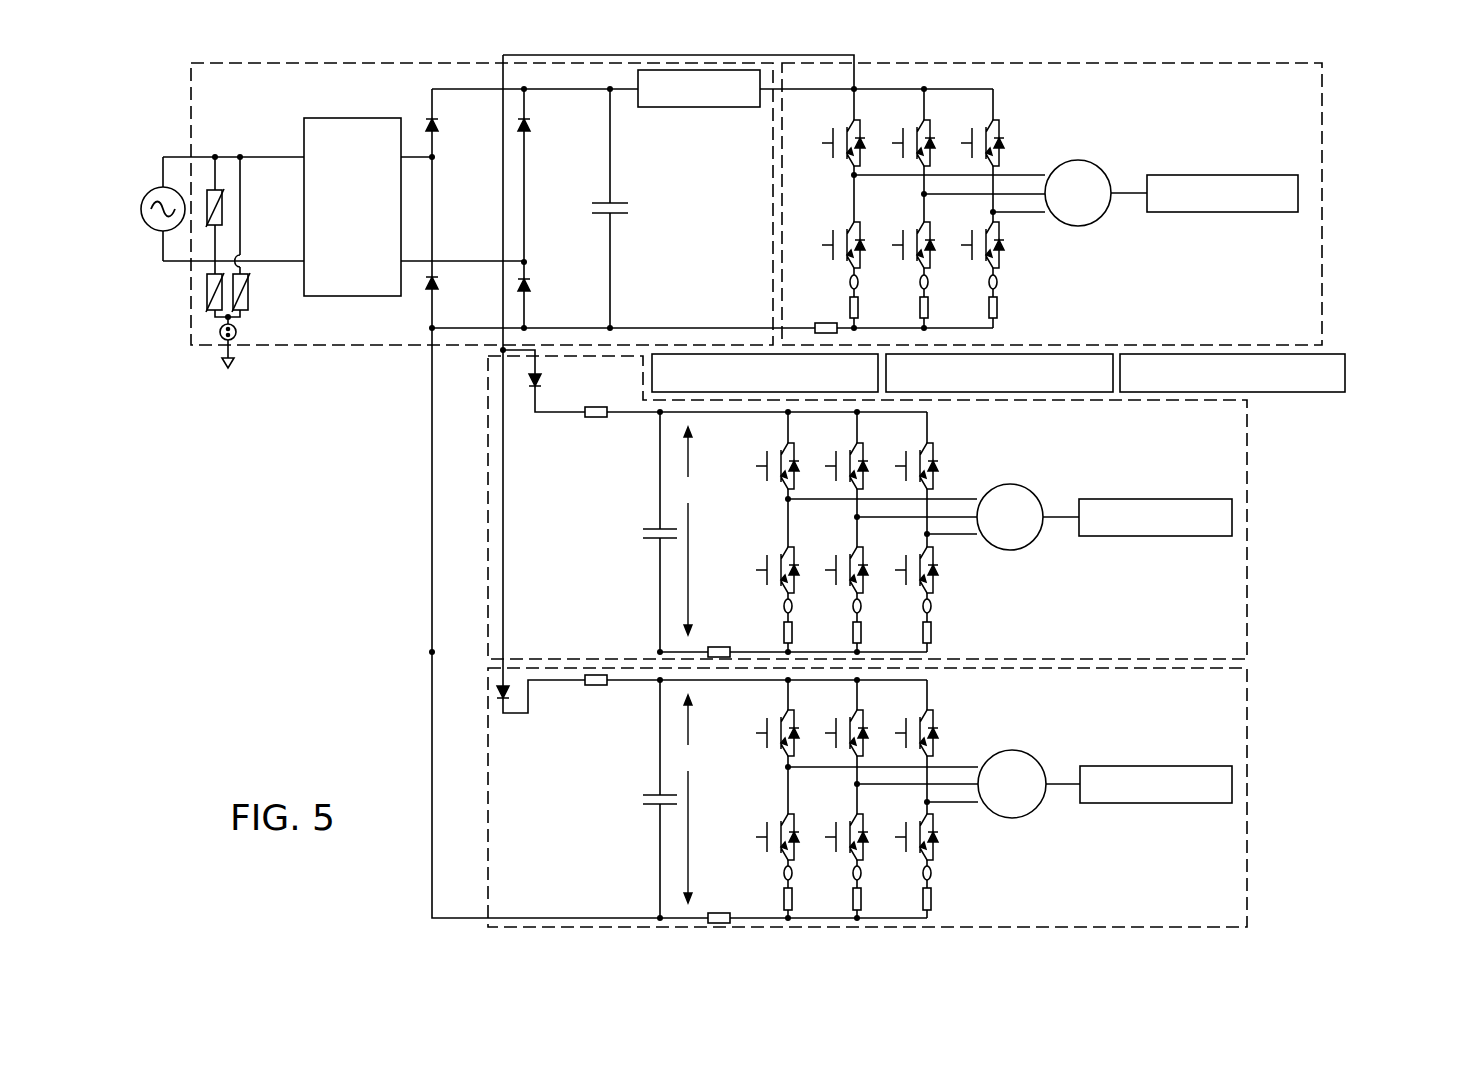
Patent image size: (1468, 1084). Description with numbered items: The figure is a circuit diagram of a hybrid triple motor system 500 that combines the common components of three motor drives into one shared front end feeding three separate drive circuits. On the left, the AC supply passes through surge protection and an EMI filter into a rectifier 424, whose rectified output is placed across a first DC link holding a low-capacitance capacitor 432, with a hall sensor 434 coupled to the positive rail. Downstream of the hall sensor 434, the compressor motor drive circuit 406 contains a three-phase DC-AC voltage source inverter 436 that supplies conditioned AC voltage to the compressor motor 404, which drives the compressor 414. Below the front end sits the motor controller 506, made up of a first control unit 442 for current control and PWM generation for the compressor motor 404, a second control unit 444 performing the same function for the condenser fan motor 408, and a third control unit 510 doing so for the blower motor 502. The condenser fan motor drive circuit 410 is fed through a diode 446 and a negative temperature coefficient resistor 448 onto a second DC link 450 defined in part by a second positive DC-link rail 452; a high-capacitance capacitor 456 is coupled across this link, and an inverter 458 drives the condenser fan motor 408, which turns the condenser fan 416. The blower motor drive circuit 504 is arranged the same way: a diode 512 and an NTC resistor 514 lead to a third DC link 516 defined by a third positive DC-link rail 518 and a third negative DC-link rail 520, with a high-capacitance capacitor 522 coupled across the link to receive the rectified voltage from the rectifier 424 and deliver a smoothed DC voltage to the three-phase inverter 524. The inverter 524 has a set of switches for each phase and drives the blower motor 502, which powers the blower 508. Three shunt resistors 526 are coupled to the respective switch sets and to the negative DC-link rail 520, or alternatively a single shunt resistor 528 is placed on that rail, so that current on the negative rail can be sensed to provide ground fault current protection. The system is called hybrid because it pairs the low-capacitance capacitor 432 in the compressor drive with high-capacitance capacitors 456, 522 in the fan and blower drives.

The hybrid triple motor system 500 is at (293, 545).
The rectifier 424 is at (425, 113).
The low-capacitance capacitor 432 is at (612, 203).
The hall sensor 434 is at (667, 107).
The compressor motor drive circuit 406 is at (1322, 155).
The inverter 436 is at (1019, 131).
The compressor motor 404 is at (1079, 160).
The compressor 414 is at (1197, 175).
The motor controller 506 is at (1335, 343).
The first control unit 442 is at (652, 372).
The second control unit 444 is at (1058, 354).
The third control unit 510 is at (1345, 372).
The condenser fan motor drive circuit 410 is at (1247, 482).
The diode 446 is at (529, 380).
The negative temperature coefficient (NTC) resistor 448 is at (593, 419).
The second positive DC-link rail 452 is at (768, 416).
The high-capacitance capacitor 456 is at (650, 528).
The second DC-link 450 is at (687, 531).
The inverter 458 is at (941, 433).
The condenser fan motor 408 is at (1012, 484).
The condenser fan 416 is at (1125, 499).
The blower motor drive circuit 504 is at (1247, 740).
The diode 512 is at (498, 692).
The negative temperature coefficient (NTC) resistor 514 is at (593, 687).
The third positive DC-link rail 518 is at (768, 684).
The third negative DC-link rail 520 is at (770, 918).
The shunt resistor 528 is at (727, 912).
The high-capacitance capacitor 522 is at (650, 794).
The third DC-link 516 is at (687, 799).
The inverter 524 is at (942, 701).
The shunt resistors 526 is at (923, 893).
The blower motor 502 is at (1014, 749).
The blower 508 is at (1122, 766).